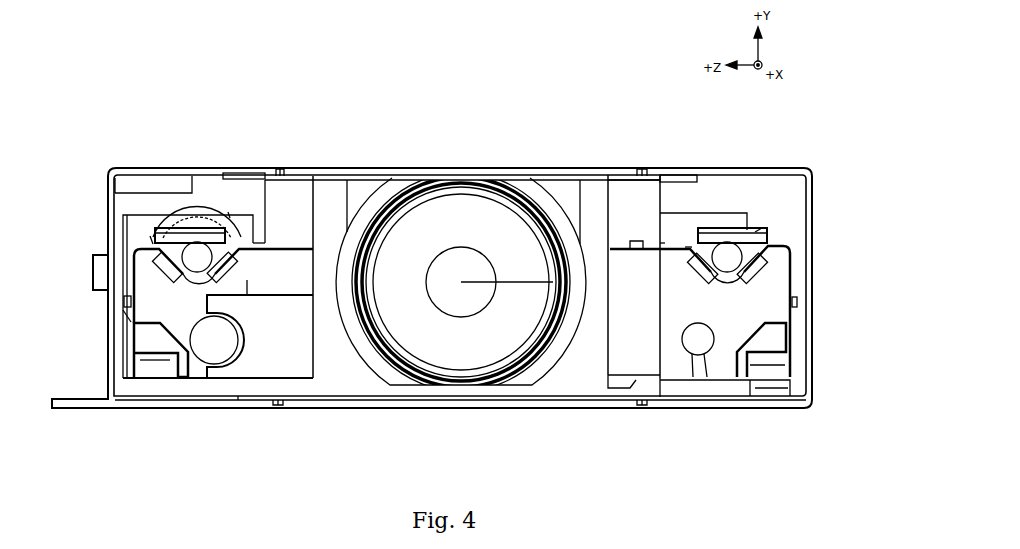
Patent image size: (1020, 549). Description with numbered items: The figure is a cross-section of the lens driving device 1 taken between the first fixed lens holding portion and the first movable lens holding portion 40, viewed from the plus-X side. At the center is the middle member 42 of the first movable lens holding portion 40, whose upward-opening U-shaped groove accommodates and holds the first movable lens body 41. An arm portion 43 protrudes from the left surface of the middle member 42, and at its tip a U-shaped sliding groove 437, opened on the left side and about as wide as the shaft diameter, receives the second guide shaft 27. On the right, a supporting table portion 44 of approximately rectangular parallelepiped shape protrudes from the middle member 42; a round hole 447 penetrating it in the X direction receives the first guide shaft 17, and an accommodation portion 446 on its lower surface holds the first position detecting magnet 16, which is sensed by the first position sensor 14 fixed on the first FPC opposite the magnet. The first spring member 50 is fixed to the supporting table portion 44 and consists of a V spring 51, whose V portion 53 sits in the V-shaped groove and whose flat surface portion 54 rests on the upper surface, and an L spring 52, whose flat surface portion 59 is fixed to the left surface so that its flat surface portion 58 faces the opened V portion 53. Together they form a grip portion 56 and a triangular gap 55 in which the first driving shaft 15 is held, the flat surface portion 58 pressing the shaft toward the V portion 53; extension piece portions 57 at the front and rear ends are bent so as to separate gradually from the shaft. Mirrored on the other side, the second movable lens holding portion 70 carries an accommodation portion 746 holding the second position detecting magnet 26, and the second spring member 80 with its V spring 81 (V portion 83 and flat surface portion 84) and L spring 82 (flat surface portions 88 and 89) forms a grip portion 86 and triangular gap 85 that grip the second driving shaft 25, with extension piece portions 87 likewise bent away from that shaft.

The lens driving device 1 is at (434, 141).
The first position sensor 14 is at (814, 404).
The first driving shaft 15 is at (727, 243).
The first position detecting magnet 16 is at (775, 366).
The first guide shaft 17 is at (704, 357).
The second driving shaft 25 is at (199, 243).
The second position detecting magnet 26 is at (158, 368).
The second guide shaft 27 is at (214, 365).
The first movable lens holding portion 40 is at (538, 298).
The first movable lens body 41 is at (472, 233).
The middle member 42 is at (565, 380).
The arm portion 43 is at (300, 355).
The supporting table portion 44 is at (780, 390).
The first spring member 50 is at (733, 287).
The V spring 51 is at (660, 243).
The L spring 52 is at (784, 240).
The V portion 53 is at (797, 304).
The flat surface portion 54 is at (652, 222).
The triangular gap 55 is at (791, 253).
The grip portion 56 is at (688, 247).
The extension piece portion 57 is at (760, 205).
The flat surface portion 58 is at (762, 228).
The flat surface portion 59 is at (793, 270).
The second movable lens holding portion 70 is at (111, 350).
The second spring member 80 is at (178, 287).
The V spring 81 is at (229, 212).
The L spring 82 is at (156, 240).
The V portion 83 is at (130, 316).
The flat surface portion 84 is at (266, 240).
The triangular gap 85 is at (133, 252).
The grip portion 86 is at (177, 210).
The extension piece portion 87 is at (118, 185).
The flat surface portion 88 is at (152, 236).
The flat surface portion 89 is at (96, 272).
The sliding groove 437 is at (235, 362).
The accommodation portion 446 is at (778, 342).
The round hole 447 is at (687, 357).
The accommodation portion 746 is at (153, 343).